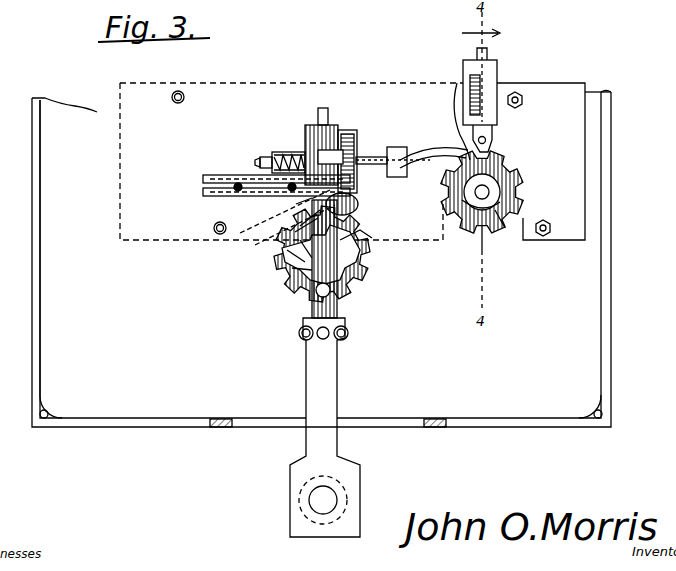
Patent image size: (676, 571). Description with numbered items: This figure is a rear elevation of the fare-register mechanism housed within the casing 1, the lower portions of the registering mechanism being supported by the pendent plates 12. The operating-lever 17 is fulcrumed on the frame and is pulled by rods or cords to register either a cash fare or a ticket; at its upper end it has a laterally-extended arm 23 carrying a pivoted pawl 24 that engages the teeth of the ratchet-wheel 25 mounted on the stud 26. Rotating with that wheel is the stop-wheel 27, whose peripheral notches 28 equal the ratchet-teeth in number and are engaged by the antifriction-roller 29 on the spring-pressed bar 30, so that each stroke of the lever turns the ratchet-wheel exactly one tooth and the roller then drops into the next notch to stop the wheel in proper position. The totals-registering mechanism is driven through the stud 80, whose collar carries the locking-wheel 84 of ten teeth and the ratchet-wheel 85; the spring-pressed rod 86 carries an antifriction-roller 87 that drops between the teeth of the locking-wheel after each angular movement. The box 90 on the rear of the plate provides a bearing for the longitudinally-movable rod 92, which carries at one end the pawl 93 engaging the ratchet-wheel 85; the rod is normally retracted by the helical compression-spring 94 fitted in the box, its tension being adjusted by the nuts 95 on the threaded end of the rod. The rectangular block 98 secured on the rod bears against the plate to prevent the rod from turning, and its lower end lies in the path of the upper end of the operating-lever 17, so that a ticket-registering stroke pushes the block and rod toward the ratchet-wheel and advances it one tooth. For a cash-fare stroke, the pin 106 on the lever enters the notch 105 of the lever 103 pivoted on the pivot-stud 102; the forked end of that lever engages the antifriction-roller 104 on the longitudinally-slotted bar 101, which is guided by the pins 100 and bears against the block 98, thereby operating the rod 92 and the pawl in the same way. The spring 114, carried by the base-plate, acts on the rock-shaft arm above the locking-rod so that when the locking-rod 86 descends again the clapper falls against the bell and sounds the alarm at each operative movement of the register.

The casing 1 is at (605, 348).
The pendent plates 12 is at (573, 137).
The operating-lever 17 is at (330, 448).
The laterally-extended arm 23 is at (358, 210).
The pivoted pawl 24 is at (356, 200).
The ratchet-wheel 25 is at (356, 255).
The stud 26 is at (312, 285).
The stop-wheel 27 is at (302, 265).
The peripheral notches 28 is at (290, 282).
The antifriction-roller 29 is at (352, 192).
The spring-pressed bar 30 is at (322, 108).
The stud 80 is at (482, 232).
The locking-wheel 84 is at (526, 190).
The ratchet-wheel 85 is at (500, 226).
The spring-pressed rod 86 is at (487, 54).
The antifriction-roller 87 is at (493, 142).
The box 90 is at (300, 152).
The longitudinally-movable rod 92 is at (378, 158).
The pawl 93 is at (421, 152).
The helical compression-spring 94 is at (280, 153).
The nuts 95 is at (260, 162).
The block 98 is at (346, 134).
The pins 100 is at (292, 190).
The longitudinally-slotted bar 101 is at (222, 163).
The pivot-stud 102 is at (298, 234).
The lever 103 is at (304, 228).
The antifriction-roller 104 is at (298, 206).
The notch 105 is at (288, 252).
The pin 106 is at (362, 242).
The spring 114 is at (492, 80).